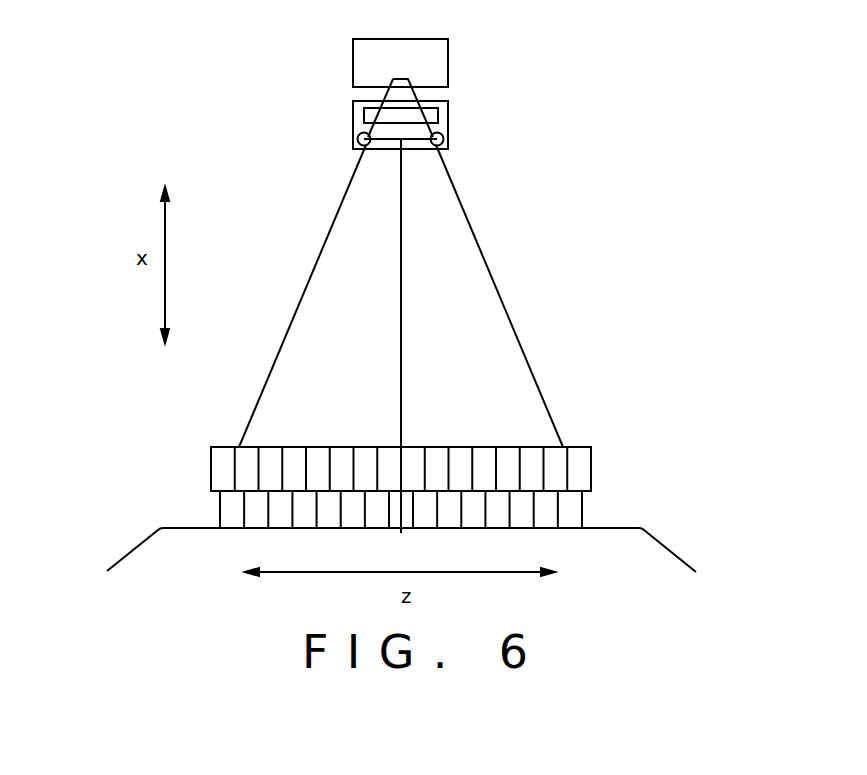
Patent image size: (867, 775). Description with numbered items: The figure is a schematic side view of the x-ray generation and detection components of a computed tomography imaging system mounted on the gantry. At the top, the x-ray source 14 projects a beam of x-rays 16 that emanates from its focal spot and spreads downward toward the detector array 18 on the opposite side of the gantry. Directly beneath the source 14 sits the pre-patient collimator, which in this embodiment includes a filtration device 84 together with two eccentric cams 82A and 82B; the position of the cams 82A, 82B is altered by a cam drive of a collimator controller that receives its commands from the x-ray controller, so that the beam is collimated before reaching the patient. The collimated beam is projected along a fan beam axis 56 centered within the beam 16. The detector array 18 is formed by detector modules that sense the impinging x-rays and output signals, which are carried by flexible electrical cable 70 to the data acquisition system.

The x-ray source 14 is at (448, 40).
The filtration device 84 is at (438, 114).
The eccentric cam 82A is at (360, 135).
The eccentric cam 82B is at (441, 135).
The x-ray beam 16 is at (500, 289).
The fan beam axis 56 is at (403, 403).
The detector array 18 is at (593, 452).
The flexible electrical cable 70 is at (123, 553).